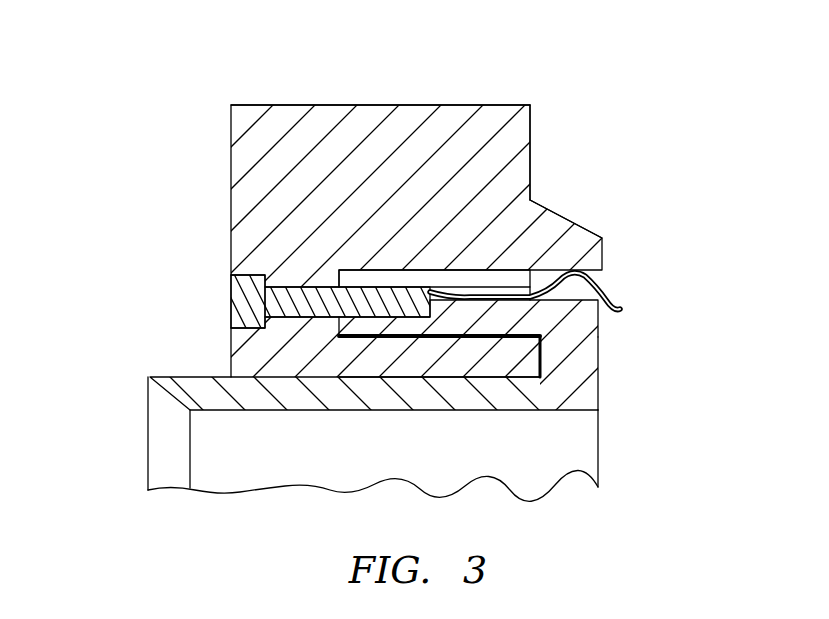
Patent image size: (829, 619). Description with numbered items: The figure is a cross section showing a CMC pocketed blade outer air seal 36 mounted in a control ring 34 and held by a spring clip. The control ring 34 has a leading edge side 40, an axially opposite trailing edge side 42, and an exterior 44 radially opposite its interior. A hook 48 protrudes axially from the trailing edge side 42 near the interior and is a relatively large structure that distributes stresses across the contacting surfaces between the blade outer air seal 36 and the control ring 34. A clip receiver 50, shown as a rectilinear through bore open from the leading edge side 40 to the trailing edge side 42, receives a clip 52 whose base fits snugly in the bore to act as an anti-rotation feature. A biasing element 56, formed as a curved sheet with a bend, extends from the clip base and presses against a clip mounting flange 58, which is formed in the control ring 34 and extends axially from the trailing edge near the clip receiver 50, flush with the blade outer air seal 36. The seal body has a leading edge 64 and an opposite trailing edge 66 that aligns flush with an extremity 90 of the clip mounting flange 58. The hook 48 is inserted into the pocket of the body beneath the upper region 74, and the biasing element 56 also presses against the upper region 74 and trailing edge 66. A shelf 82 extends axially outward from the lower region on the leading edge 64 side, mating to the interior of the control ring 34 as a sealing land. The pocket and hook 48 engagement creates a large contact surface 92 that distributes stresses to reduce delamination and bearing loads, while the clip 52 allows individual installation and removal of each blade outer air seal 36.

The control ring 34 is at (505, 153).
The blade outer air seal 36 is at (585, 398).
The leading edge side 40 is at (414, 213).
The trailing edge side 42 is at (537, 115).
The exterior 44 is at (380, 92).
The hook 48 is at (467, 360).
The clip receiver 50 is at (299, 279).
The clip 52 is at (231, 302).
The biasing element 56 is at (612, 292).
The clip mounting flange 58 is at (570, 217).
The leading edge 64 is at (414, 300).
The trailing edge 66 is at (607, 333).
The upper region 74 is at (477, 318).
The shelf 82 is at (248, 393).
The extremity 90 is at (603, 260).
The contact surface 92 is at (340, 327).